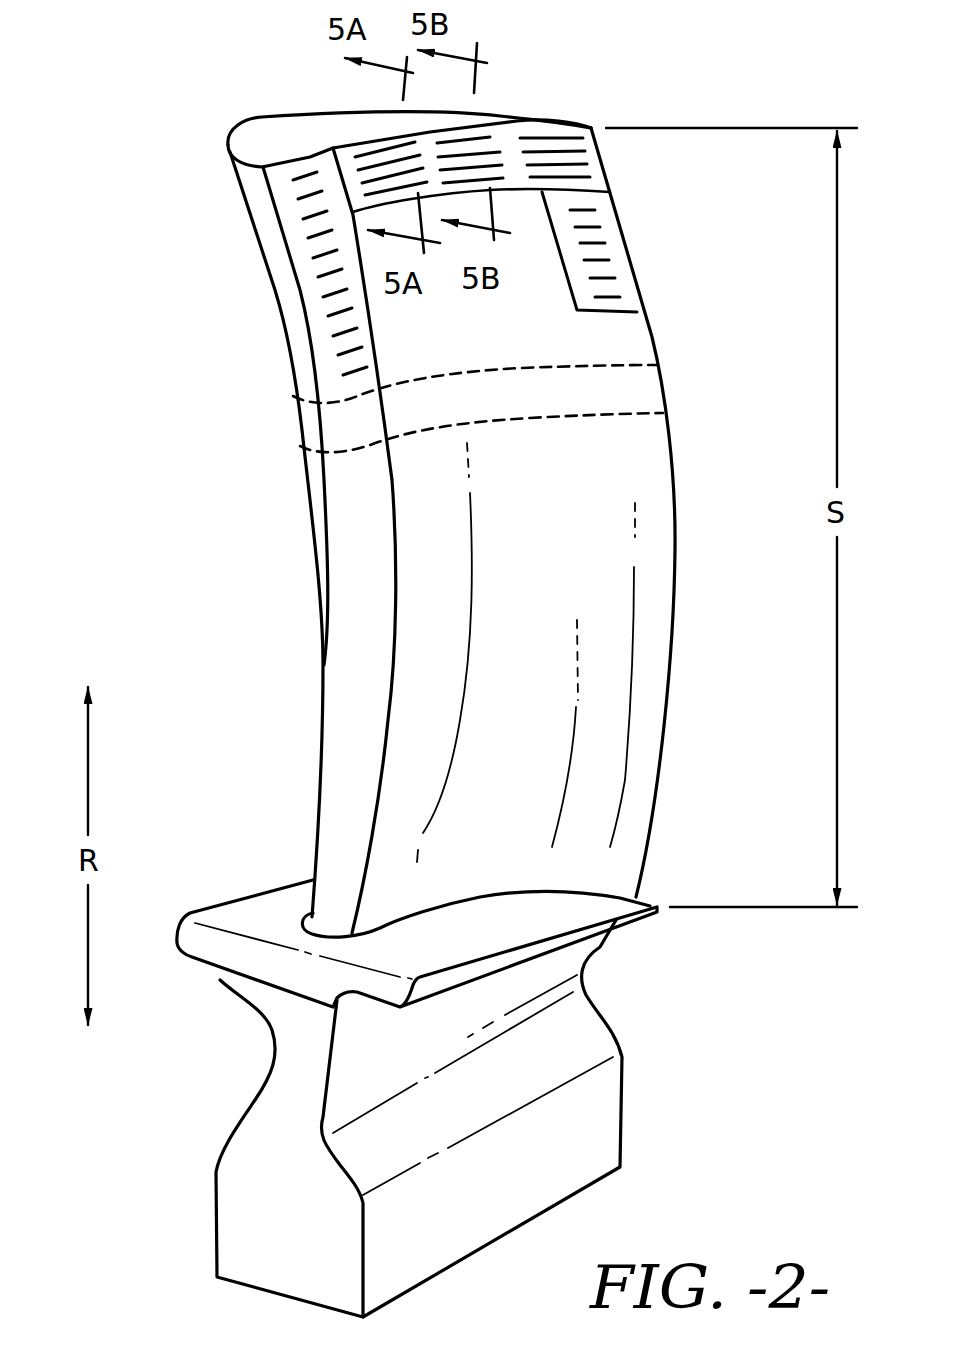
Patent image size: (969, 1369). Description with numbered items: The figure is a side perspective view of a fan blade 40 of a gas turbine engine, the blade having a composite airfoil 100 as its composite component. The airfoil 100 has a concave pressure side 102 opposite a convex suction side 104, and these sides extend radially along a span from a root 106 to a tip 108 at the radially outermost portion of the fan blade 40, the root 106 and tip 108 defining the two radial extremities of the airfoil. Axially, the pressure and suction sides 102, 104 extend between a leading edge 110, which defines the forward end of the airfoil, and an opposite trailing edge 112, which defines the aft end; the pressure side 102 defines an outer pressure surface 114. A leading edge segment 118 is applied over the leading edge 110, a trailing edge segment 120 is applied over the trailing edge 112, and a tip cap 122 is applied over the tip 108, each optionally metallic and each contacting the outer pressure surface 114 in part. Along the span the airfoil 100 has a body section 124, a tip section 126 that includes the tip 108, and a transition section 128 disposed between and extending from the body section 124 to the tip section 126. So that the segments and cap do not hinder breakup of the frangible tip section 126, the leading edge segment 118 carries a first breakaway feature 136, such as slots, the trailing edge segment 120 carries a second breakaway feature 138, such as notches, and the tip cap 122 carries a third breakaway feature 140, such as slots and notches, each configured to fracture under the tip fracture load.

The fan blade 40 is at (168, 100).
The composite airfoil 100 is at (628, 330).
The pressure side 102 is at (607, 642).
The suction side 104 is at (289, 100).
The root 106 is at (675, 900).
The tip 108 is at (606, 124).
The leading edge 110 is at (216, 242).
The trailing edge 112 is at (702, 513).
The outer pressure surface 114 is at (565, 518).
The leading edge segment 118 is at (350, 785).
The trailing edge segment 120 is at (618, 271).
The tip cap 122 is at (509, 148).
The body section 124 is at (300, 640).
The tip section 126 is at (265, 352).
The transition section 128 is at (283, 420).
The first breakaway feature 136 is at (312, 218).
The second breakaway feature 138 is at (590, 226).
The third breakaway feature 140 is at (483, 138).